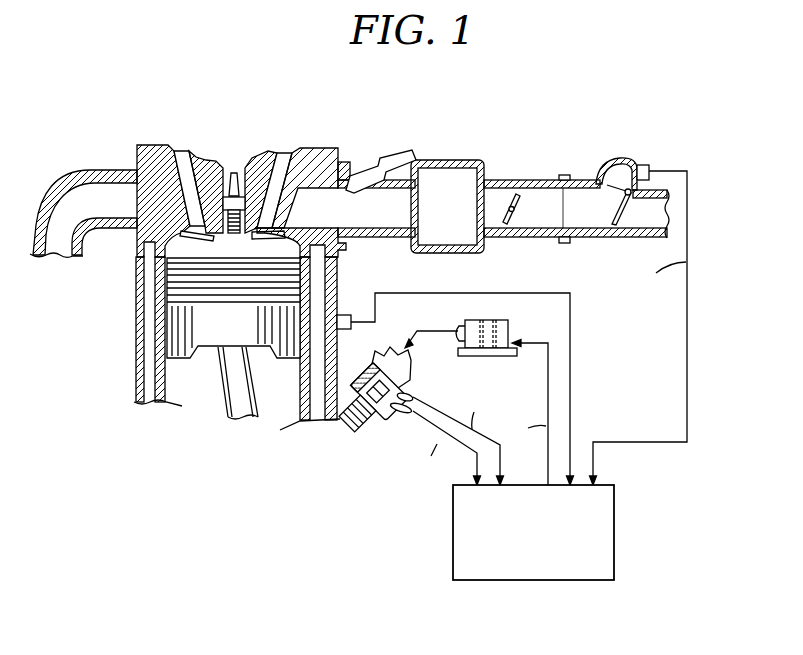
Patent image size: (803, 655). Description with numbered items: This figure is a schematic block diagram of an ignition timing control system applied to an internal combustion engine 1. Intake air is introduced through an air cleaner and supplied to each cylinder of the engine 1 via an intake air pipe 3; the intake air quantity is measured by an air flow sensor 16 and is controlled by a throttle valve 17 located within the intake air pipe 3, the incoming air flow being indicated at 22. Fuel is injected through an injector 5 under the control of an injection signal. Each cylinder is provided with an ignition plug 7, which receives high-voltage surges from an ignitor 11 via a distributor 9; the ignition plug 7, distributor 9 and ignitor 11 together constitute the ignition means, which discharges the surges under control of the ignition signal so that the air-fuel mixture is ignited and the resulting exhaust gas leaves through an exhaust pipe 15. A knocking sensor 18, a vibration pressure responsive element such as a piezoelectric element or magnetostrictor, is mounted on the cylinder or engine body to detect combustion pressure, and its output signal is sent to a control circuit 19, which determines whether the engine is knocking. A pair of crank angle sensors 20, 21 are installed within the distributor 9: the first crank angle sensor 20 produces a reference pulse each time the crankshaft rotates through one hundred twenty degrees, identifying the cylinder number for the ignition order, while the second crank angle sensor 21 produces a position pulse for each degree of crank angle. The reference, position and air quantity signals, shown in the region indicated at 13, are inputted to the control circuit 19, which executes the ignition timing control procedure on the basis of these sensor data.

The engine 1 is at (149, 403).
The intake air pipe 3 is at (575, 177).
The injector 5 is at (378, 166).
The ignition plug 7 is at (236, 172).
The distributor 9 is at (395, 350).
The ignitor 11 is at (497, 362).
The crank angle sensor signal unit 13 is at (396, 477).
The exhaust pipe 15 is at (68, 181).
The air flow sensor 16 is at (648, 166).
The throttle valve 17 is at (521, 202).
The knocking sensor 18 is at (340, 315).
The control circuit 19 is at (614, 555).
The crank angle sensor 20 is at (396, 415).
The crank angle sensor 21 is at (408, 393).
The intake air 22 is at (692, 163).